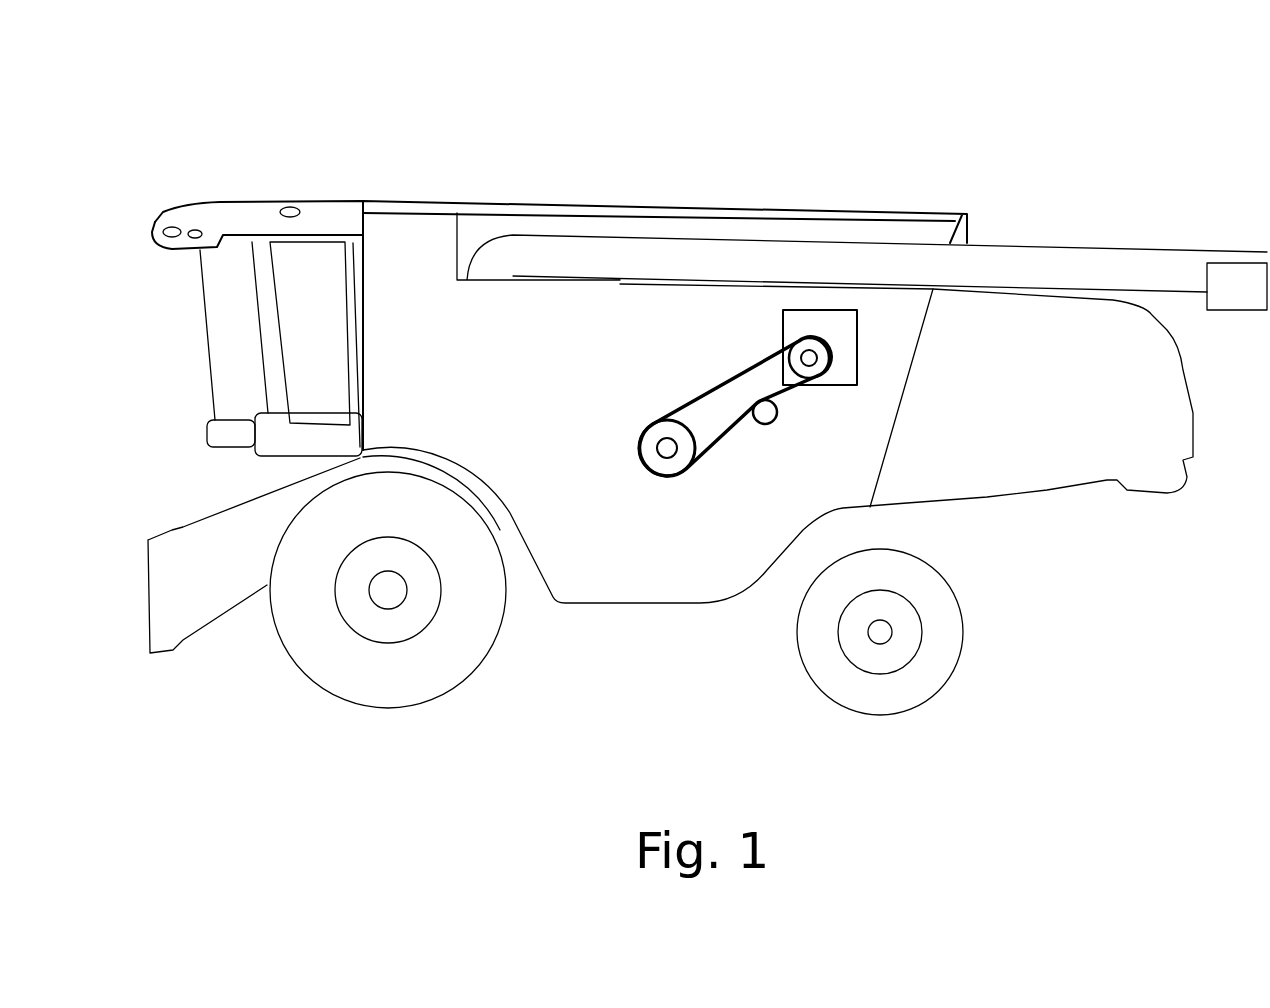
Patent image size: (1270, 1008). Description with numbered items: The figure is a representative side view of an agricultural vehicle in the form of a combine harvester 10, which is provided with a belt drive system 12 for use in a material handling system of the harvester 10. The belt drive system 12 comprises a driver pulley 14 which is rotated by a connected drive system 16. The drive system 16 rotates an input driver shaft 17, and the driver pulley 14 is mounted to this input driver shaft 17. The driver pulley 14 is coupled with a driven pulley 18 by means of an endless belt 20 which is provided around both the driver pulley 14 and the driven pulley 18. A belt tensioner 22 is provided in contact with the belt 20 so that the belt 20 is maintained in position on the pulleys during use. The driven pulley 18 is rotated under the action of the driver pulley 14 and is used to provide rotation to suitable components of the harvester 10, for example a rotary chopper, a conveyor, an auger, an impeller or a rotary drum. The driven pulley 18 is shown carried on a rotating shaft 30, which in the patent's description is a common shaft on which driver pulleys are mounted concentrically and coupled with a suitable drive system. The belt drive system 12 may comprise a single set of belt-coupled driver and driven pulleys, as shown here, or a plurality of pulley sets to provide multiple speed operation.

The combine harvester 10 is at (379, 146).
The belt drive system 12 is at (690, 340).
The driver pulley 14 is at (823, 345).
The drive system 16 is at (857, 342).
The input driver shaft 17 is at (808, 338).
The driven pulley 18 is at (653, 477).
The endless belt 20 is at (718, 433).
The belt tensioner 22 is at (776, 422).
The common rotating shaft 30 is at (673, 455).